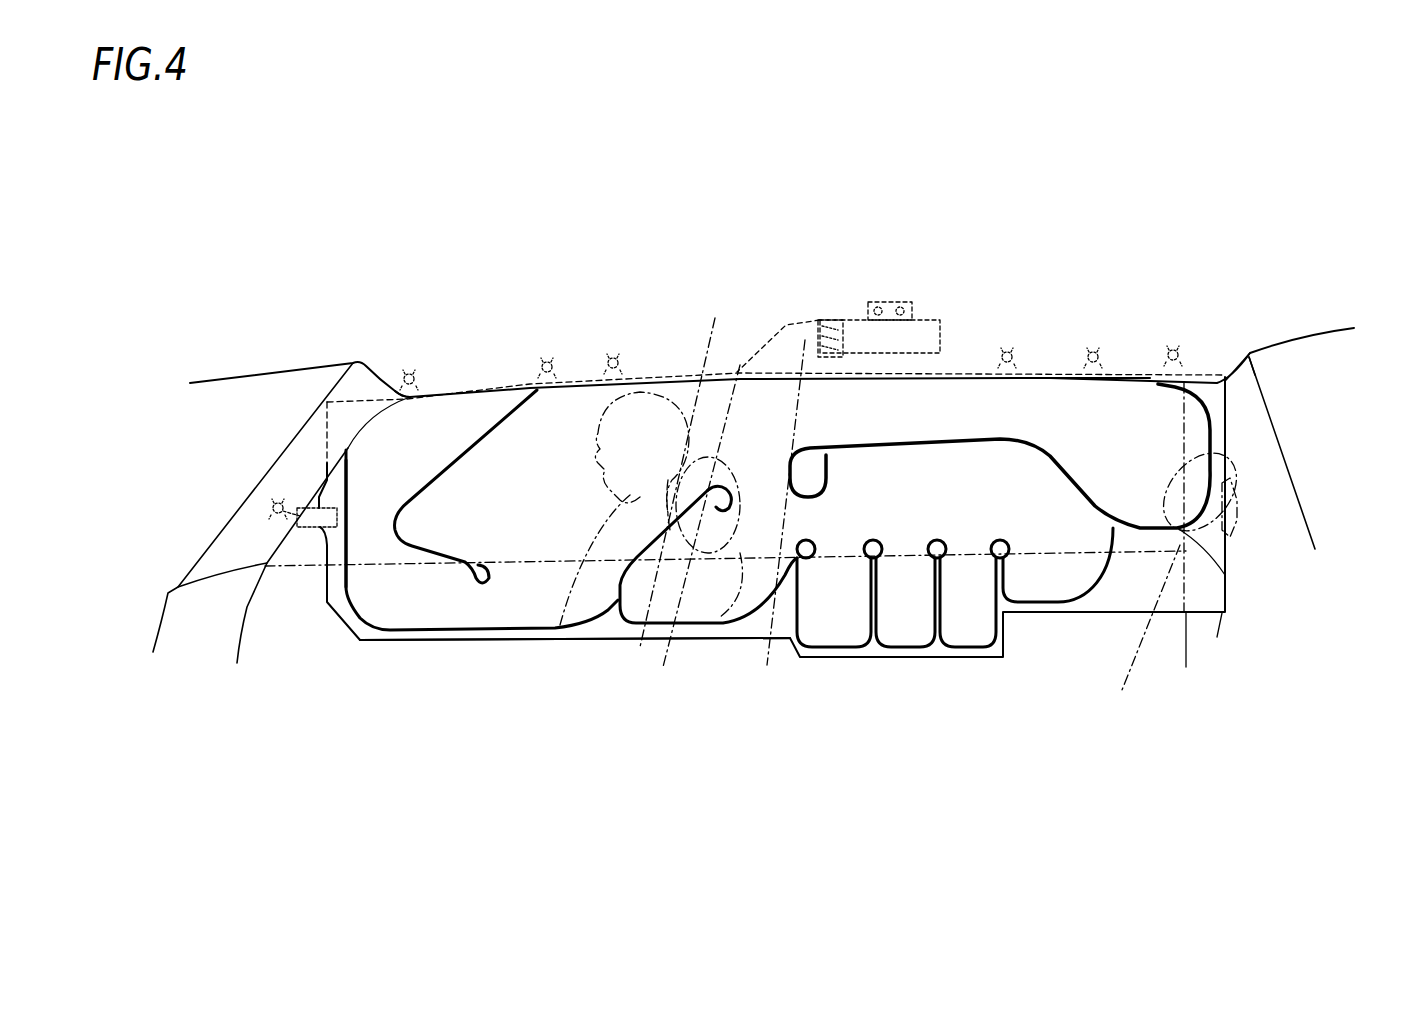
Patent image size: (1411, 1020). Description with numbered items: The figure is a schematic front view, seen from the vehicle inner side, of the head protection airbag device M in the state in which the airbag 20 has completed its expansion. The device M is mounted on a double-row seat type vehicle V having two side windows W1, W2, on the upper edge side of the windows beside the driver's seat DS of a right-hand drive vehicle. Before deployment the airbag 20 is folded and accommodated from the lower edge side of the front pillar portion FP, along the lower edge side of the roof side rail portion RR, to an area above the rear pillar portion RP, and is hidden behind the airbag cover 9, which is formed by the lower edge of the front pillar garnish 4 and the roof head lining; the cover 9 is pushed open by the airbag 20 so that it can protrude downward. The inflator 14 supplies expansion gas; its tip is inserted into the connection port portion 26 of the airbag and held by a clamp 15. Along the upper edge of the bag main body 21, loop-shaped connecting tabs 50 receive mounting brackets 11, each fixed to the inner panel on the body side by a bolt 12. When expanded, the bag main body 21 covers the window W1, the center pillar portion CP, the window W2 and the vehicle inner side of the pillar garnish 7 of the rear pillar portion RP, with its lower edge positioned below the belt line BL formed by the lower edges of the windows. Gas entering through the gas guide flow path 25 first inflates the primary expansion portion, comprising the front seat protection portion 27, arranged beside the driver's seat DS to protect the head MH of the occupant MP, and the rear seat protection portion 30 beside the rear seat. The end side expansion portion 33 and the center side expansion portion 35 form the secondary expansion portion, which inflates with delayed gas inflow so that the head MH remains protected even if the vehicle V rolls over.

The front pillar garnish 4 is at (314, 432).
The pillar garnish 7 is at (1280, 478).
The airbag cover 9 is at (268, 548).
The mounting bracket 11 is at (412, 377).
The bolt 12 is at (402, 378).
The inflator 14 is at (925, 305).
The clamp 15 is at (810, 368).
The airbag 20 is at (338, 652).
The bag main body 21 is at (497, 645).
The gas guide flow path 25 is at (955, 392).
The connection port portion 26 is at (786, 320).
The front seat protection portion 27 is at (549, 590).
The rear seat protection portion 30 is at (1200, 432).
The end side expansion portion 33 is at (373, 590).
The center side expansion portion 35 is at (838, 628).
The connecting tab 50 is at (550, 370).
The belt line BL is at (410, 575).
The center pillar portion CP is at (798, 430).
The driver's seat DS is at (634, 650).
The front pillar portion FP is at (232, 510).
The head protection airbag device M is at (1233, 327).
The head MH is at (700, 380).
The occupant MP is at (574, 540).
The rear pillar portion RP is at (1283, 421).
The roof side rail portion RR is at (472, 390).
The vehicle V is at (1303, 305).
The window W1 is at (312, 552).
The window W2 is at (1070, 538).